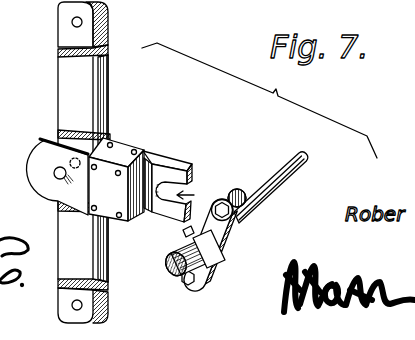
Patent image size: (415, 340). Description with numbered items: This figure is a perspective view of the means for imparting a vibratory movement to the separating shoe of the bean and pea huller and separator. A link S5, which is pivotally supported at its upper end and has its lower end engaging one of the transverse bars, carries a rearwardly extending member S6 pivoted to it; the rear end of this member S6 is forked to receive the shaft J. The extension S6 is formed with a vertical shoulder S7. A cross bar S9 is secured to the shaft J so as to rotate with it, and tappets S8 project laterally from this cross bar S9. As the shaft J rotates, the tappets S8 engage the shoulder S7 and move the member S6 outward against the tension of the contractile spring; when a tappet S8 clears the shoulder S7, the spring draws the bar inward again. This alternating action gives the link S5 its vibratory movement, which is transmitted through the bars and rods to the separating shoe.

The link S5 is at (67, 86).
The rearwardly extending member S6 is at (43, 187).
The vertical shoulder S7 is at (135, 217).
The tappet S8 is at (232, 192).
The cross bar S9 is at (218, 237).
The shaft J is at (291, 180).